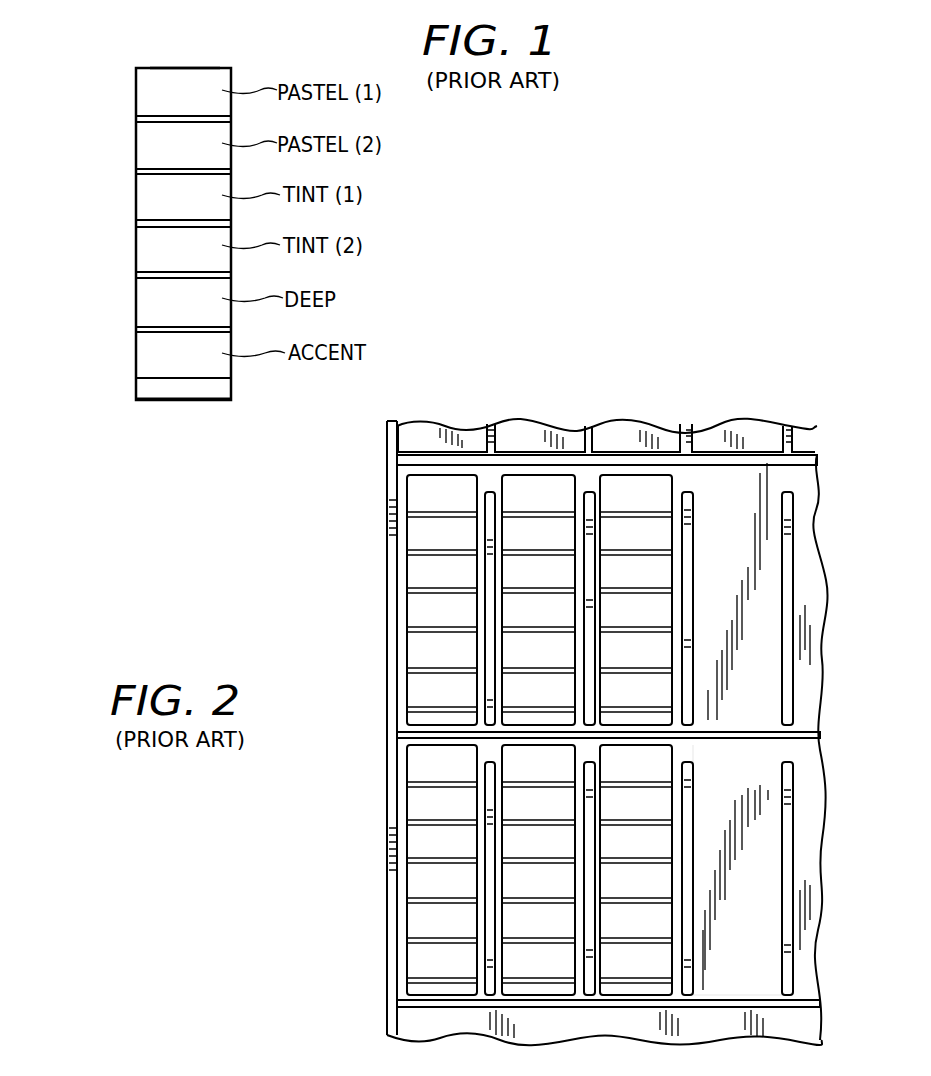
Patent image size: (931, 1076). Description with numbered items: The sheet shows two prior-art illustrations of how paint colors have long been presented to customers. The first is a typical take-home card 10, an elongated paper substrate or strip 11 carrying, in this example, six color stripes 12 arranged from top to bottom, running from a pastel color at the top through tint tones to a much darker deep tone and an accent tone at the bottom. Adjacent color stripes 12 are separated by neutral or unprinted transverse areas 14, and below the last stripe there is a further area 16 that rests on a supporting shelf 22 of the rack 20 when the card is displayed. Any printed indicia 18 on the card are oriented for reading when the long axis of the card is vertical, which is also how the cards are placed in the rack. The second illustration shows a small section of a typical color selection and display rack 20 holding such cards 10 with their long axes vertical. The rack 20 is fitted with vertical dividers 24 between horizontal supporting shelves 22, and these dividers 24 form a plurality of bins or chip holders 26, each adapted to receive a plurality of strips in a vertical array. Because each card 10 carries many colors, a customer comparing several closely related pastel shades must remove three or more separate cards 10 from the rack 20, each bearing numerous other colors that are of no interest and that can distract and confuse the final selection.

In FIG. 1, the take-home card 10 is at (150, 68).
In FIG. 1, the paper substrate or strip 11 is at (184, 68).
In FIG. 1, the color stripes 12 is at (163, 147).
In FIG. 1, the neutral or unprinted transverse areas 14 is at (137, 220).
In FIG. 1, the area below the last stripe 16 is at (147, 390).
In FIG. 1, the printed indicia 18 is at (140, 358).
In FIG. 2, the rack 20 is at (662, 442).
In FIG. 2, the supporting shelf 22 is at (793, 738).
In FIG. 2, the vertical dividers 24 is at (792, 567).
In FIG. 2, the bins or chip holders 26 is at (747, 893).